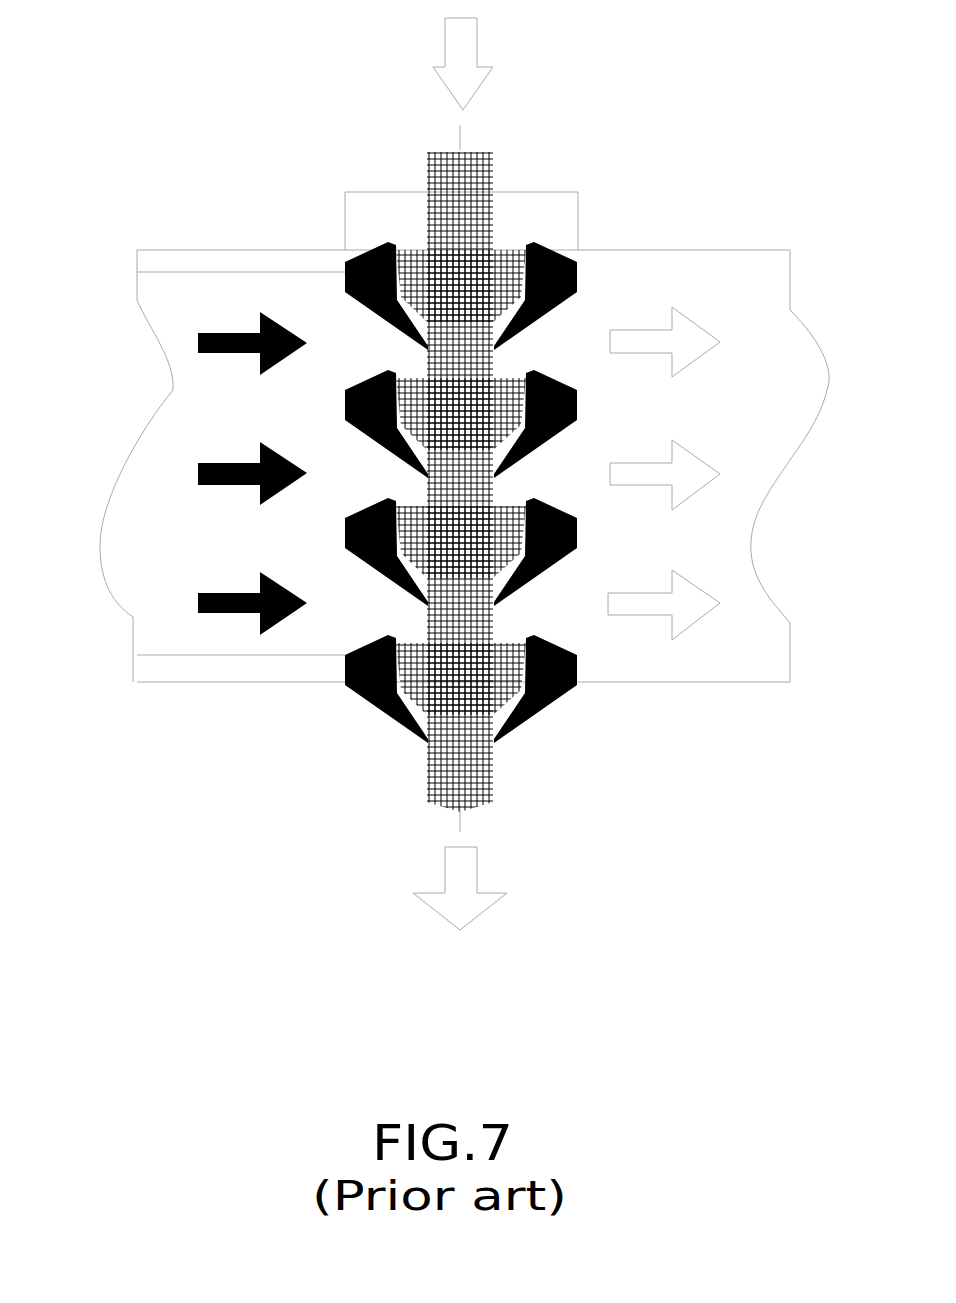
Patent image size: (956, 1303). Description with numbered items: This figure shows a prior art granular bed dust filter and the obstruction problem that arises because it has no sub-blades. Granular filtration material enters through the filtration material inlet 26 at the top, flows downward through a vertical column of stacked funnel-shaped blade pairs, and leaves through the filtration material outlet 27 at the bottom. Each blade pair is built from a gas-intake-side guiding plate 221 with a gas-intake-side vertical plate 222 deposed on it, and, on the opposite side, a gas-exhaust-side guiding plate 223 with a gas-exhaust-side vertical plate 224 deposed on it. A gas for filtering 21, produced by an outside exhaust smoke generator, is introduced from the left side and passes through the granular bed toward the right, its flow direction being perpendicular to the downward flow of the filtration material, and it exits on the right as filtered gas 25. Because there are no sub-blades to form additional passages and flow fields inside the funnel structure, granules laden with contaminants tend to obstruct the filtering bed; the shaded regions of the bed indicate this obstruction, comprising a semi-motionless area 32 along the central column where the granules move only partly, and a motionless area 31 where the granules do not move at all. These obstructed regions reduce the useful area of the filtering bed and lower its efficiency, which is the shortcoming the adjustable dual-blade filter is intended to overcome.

The gas for filtering 21 is at (122, 606).
The gas-intake-side guiding plate 221 is at (345, 462).
The gas-intake-side vertical plate 222 is at (347, 410).
The gas-exhaust-side guiding plate 223 is at (585, 482).
The gas-exhaust-side vertical plate 224 is at (597, 390).
The filtered gas 25 is at (752, 560).
The filtration material inlet 26 is at (483, 27).
The filtration material outlet 27 is at (480, 875).
The motionless area 31 is at (573, 232).
The semi-motionless area 32 is at (400, 230).